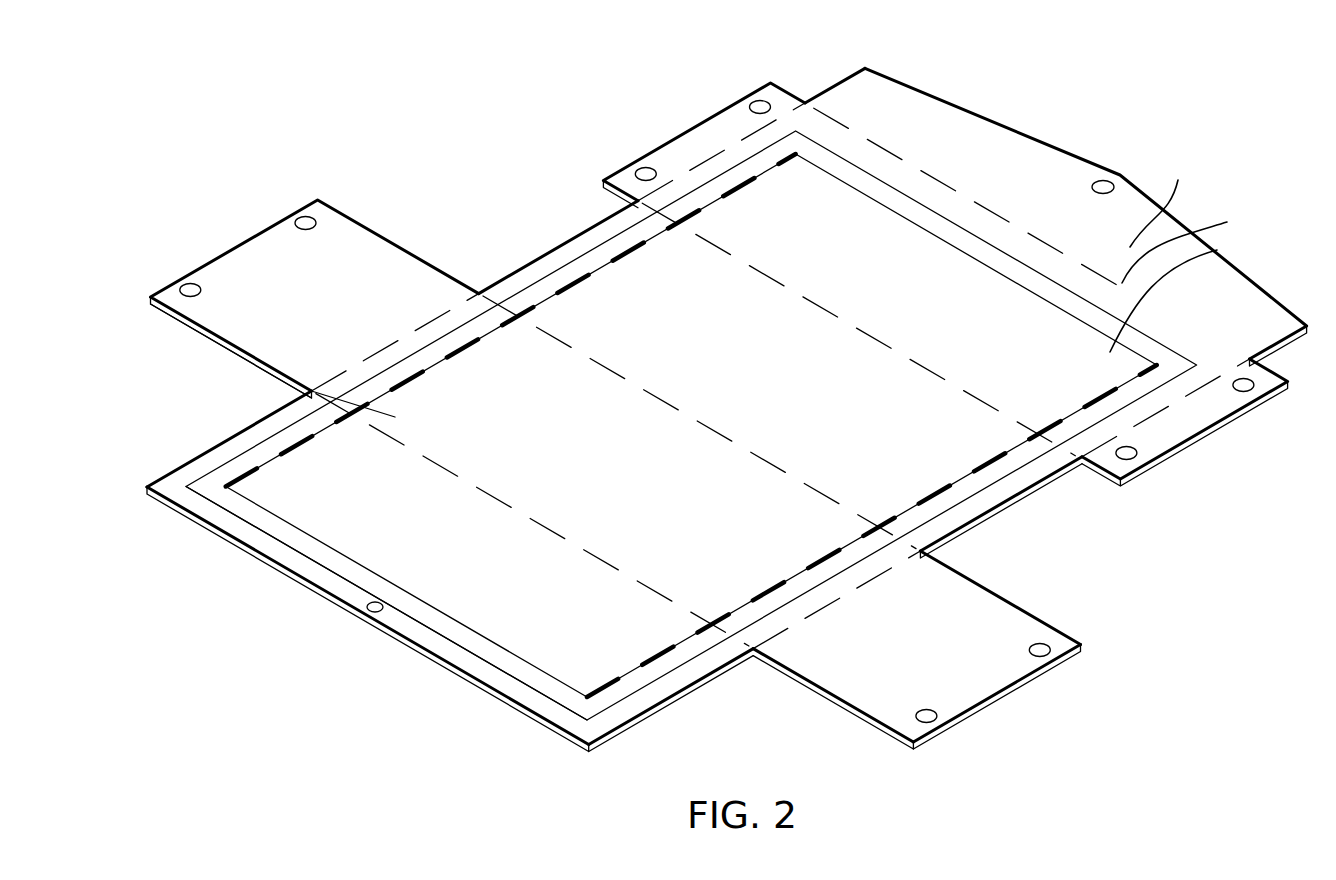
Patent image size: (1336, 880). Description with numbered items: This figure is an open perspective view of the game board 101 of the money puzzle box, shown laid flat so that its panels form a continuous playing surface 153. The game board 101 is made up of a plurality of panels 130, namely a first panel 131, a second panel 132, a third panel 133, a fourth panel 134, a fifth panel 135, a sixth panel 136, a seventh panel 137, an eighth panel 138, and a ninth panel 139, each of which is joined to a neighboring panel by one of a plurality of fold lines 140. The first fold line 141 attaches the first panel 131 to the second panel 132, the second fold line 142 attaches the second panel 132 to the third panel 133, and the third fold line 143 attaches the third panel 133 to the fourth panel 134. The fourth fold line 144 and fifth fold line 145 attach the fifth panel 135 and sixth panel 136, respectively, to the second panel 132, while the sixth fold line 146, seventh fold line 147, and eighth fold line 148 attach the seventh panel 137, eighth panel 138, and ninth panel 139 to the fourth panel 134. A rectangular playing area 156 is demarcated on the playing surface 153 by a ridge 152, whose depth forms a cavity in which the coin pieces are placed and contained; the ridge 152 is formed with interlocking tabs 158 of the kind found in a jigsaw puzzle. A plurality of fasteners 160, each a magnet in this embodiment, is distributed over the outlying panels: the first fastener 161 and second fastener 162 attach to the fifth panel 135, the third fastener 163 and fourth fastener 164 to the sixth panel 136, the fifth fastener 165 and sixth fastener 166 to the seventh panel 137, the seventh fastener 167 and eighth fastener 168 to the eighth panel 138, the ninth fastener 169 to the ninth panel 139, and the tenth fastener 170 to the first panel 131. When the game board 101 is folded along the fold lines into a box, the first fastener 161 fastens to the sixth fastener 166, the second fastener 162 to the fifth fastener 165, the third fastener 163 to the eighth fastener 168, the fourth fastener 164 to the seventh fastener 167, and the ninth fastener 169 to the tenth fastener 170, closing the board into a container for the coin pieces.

The game board 101 is at (468, 130).
The plurality of panels 130 is at (810, 667).
The first panel 131 is at (560, 660).
The second panel 132 is at (300, 391).
The third panel 133 is at (570, 330).
The fourth panel 134 is at (1217, 251).
The fifth panel 135 is at (372, 262).
The sixth panel 136 is at (962, 695).
The seventh panel 137 is at (693, 128).
The eighth panel 138 is at (1163, 435).
The ninth panel 139 is at (1167, 194).
The plurality of fold lines 140 is at (825, 493).
The first fold line 141 is at (555, 530).
The second fold line 142 is at (727, 433).
The third fold line 143 is at (843, 317).
The fourth fold line 144 is at (398, 342).
The fifth fold line 145 is at (820, 605).
The sixth fold line 146 is at (717, 157).
The seventh fold line 147 is at (1140, 376).
The eighth fold line 148 is at (1187, 234).
The ridge 152 is at (647, 663).
The playing surface 153 is at (465, 607).
The playing area 156 is at (947, 272).
The interlocking tabs 158 is at (678, 228).
The plurality of fasteners 160 is at (205, 246).
The first fastener 161 is at (186, 283).
The second fastener 162 is at (300, 215).
The third fastener 163 is at (925, 725).
The fourth fastener 164 is at (1042, 660).
The fifth fastener 165 is at (637, 165).
The sixth fastener 166 is at (757, 98).
The seventh fastener 167 is at (1128, 461).
The eighth fastener 168 is at (1246, 392).
The ninth fastener 169 is at (1100, 181).
The tenth fastener 170 is at (368, 610).